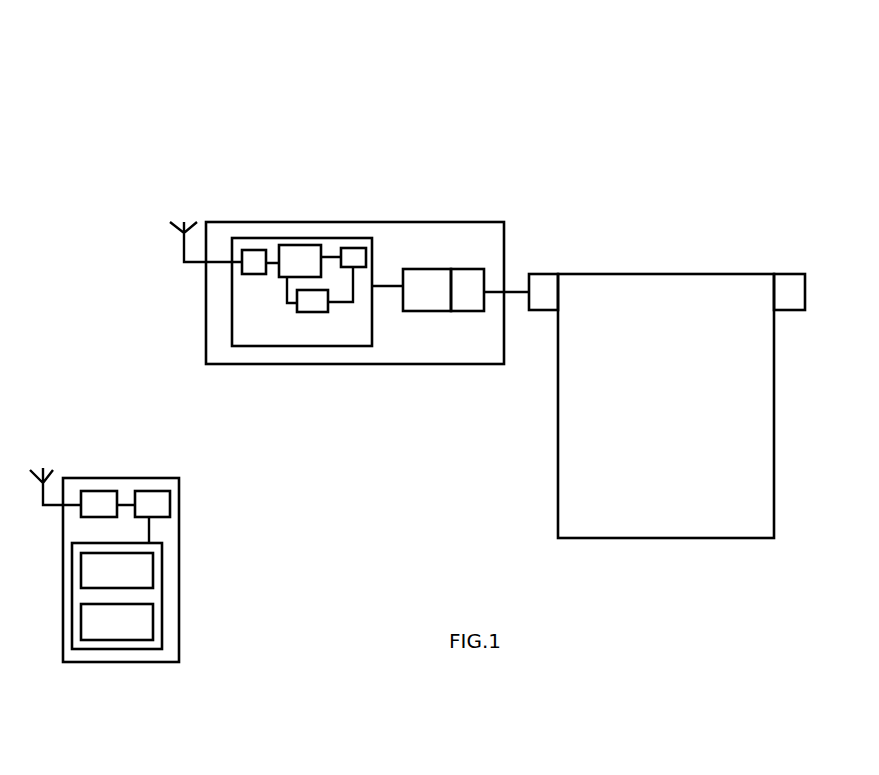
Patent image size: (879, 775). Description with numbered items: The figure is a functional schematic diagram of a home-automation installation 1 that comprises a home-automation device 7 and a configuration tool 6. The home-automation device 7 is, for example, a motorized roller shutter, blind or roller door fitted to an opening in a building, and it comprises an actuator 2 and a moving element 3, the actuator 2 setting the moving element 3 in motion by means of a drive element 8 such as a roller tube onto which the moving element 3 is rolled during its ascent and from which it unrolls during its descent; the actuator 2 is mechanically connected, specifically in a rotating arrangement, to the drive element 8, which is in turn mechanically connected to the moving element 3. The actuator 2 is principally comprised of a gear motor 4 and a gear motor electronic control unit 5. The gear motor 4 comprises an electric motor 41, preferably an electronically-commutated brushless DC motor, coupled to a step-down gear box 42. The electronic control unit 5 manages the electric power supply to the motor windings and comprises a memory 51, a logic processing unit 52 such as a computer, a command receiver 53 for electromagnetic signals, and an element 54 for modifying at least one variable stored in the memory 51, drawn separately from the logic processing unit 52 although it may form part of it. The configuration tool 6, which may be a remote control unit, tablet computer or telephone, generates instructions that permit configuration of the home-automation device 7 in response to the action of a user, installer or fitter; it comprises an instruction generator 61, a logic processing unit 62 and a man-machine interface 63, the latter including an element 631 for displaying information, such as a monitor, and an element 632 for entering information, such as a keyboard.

The home-automation installation 1 is at (630, 130).
The actuator 2 is at (322, 218).
The moving element 3 is at (592, 272).
The gear motor 4 is at (441, 269).
The electric motor 41 is at (425, 311).
The step-down gear box 42 is at (478, 312).
The gear motor electronic control unit 5 is at (259, 238).
The memory 51 is at (353, 249).
The logic processing unit 52 is at (296, 244).
The command receiver 53 is at (248, 250).
The modification element 54 is at (310, 312).
The configuration tool 6 is at (179, 575).
The instruction generator 61 is at (93, 491).
The logic processing unit 62 is at (153, 491).
The man-machine interface 63 is at (162, 557).
The display element 631 is at (153, 579).
The input element 632 is at (153, 631).
The home-automation device 7 is at (573, 218).
The drive element 8 is at (550, 272).